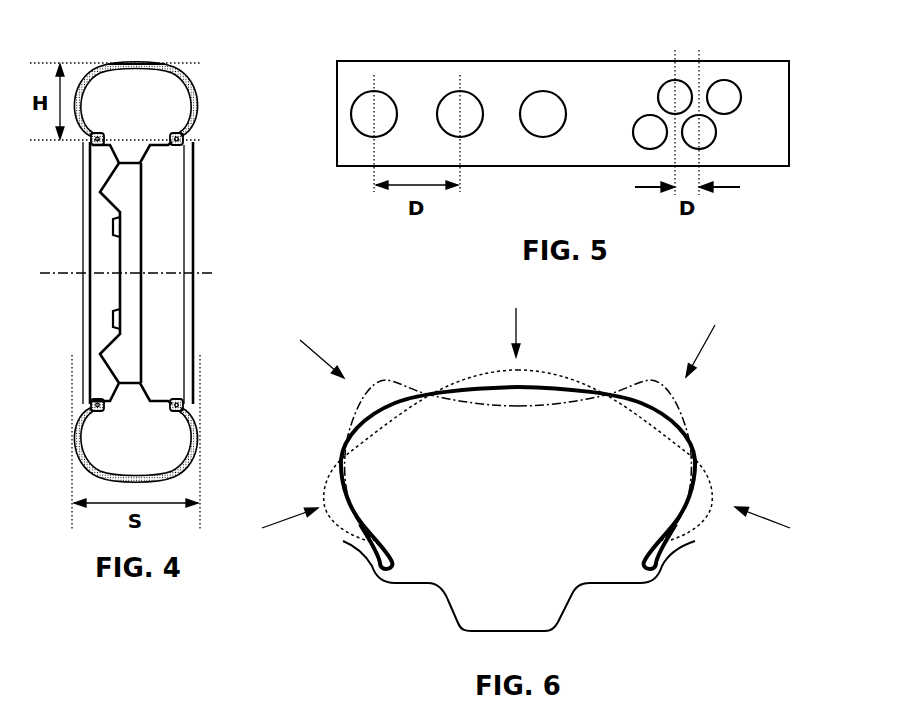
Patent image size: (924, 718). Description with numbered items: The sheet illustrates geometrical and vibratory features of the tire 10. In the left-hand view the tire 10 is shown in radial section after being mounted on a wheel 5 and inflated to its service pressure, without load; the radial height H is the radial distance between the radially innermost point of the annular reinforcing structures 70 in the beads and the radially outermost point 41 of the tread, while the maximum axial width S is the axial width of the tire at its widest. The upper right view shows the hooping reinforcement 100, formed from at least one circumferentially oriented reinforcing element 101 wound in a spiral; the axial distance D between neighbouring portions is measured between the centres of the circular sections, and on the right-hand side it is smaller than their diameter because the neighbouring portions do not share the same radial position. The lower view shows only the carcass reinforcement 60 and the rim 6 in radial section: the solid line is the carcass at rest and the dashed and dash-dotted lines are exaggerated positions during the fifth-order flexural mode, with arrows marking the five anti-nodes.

In FIG. 4, the tire 10 is at (172, 272).
In FIG. 4, the radially outermost point of the tread 41 is at (136, 58).
In FIG. 4, the annular reinforcing structures 70 is at (101, 134).
In FIG. 4, the wheel 5 is at (209, 188).
In FIG. 5, the hooping reinforcement 100 is at (508, 148).
In FIG. 5, the reinforcing element 101 is at (468, 110).
In FIG. 6, the carcass reinforcement 60 is at (390, 540).
In FIG. 6, the rim 6 is at (450, 612).